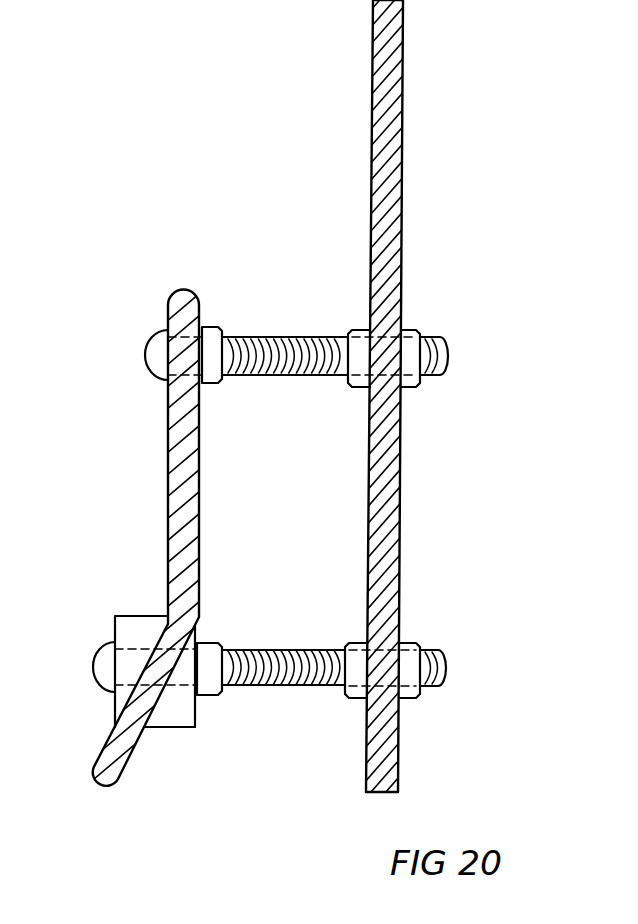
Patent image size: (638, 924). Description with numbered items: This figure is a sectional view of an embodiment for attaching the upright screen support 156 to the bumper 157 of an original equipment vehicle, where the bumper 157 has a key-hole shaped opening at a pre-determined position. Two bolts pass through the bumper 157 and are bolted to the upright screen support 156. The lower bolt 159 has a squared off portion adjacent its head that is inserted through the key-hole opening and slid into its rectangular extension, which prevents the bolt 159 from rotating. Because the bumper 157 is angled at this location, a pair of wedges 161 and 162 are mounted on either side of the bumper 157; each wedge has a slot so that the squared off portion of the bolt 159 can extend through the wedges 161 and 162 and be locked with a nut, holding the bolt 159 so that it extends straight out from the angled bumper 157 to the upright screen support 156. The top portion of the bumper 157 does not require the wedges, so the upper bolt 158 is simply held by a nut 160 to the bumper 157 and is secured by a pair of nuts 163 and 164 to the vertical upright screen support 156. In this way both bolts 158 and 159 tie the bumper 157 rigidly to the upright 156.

The upright screen support 156 is at (400, 175).
The bumper 157 is at (168, 500).
The bolt 158 is at (237, 336).
The bolt 159 is at (264, 693).
The nut 160 is at (210, 326).
The wedge 161 is at (122, 615).
The wedge 162 is at (178, 728).
The nut 163 is at (356, 326).
The nut 164 is at (418, 330).